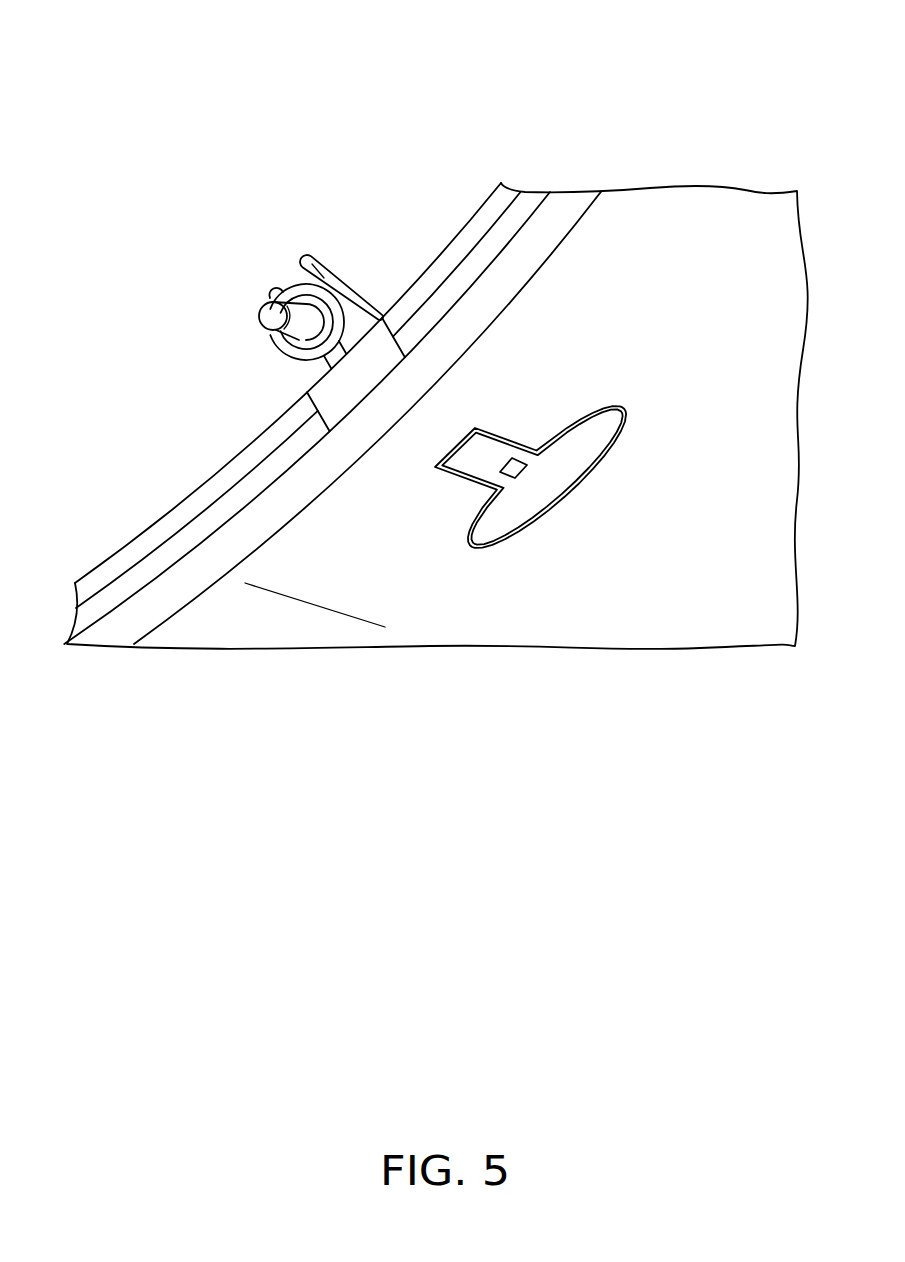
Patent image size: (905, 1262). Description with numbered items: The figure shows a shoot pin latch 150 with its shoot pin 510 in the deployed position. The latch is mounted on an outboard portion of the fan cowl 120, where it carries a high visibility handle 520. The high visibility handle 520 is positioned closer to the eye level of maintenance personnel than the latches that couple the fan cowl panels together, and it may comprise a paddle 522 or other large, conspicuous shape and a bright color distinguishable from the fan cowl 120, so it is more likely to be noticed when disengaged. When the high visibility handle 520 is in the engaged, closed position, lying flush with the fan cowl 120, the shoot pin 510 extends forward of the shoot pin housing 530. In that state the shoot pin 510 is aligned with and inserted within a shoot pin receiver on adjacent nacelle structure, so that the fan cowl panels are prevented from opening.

The fan cowl 120 is at (711, 603).
The shoot pin latch 150 is at (158, 80).
The shoot pin 510 is at (258, 313).
The high visibility handle 520 is at (468, 545).
The paddle 522 is at (552, 480).
The shoot pin housing 530 is at (290, 284).